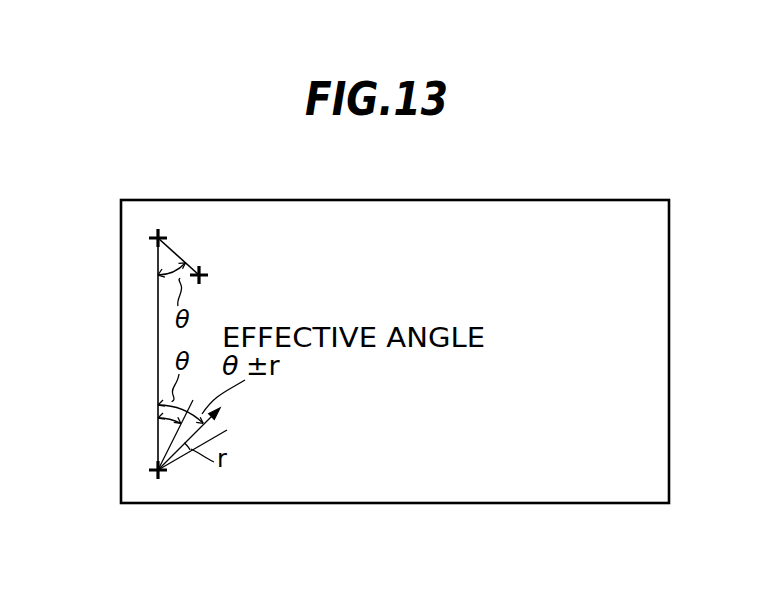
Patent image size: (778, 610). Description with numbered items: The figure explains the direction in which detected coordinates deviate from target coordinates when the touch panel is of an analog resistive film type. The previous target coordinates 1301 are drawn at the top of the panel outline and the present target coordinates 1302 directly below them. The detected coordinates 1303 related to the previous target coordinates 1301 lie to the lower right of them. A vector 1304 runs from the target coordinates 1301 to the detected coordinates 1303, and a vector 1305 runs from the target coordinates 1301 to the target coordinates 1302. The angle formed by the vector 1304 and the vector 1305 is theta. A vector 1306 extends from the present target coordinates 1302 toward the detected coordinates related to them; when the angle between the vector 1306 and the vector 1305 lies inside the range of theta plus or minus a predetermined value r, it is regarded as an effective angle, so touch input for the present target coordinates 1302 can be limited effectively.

The previous target coordinates 1301 is at (159, 232).
The present target coordinates 1302 is at (160, 474).
The detected coordinates 1303 is at (204, 280).
The vector 1304 is at (177, 257).
The vector 1305 is at (158, 355).
The vector 1306 is at (203, 428).